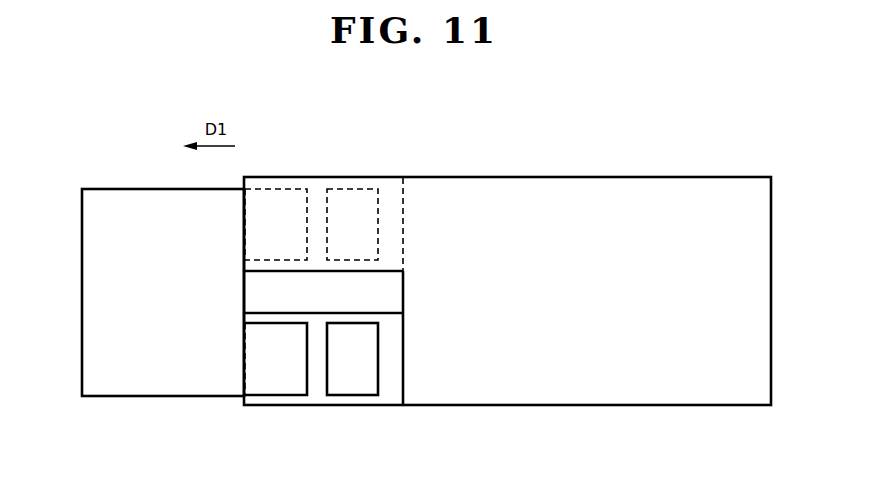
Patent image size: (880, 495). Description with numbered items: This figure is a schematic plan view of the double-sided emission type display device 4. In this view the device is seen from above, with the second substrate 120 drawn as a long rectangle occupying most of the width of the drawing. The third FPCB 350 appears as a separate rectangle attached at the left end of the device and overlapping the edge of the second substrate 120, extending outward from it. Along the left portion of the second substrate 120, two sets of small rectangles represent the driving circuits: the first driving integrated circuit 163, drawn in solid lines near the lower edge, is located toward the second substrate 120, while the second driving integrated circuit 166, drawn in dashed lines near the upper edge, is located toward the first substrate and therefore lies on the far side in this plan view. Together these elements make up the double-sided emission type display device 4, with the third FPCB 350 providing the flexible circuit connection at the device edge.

The double-sided emission type display device 4 is at (755, 142).
The second substrate 120 is at (570, 192).
The first driving integrated circuit 163 is at (352, 388).
The second driving integrated circuit 166 is at (355, 195).
The third FPCB 350 is at (163, 385).